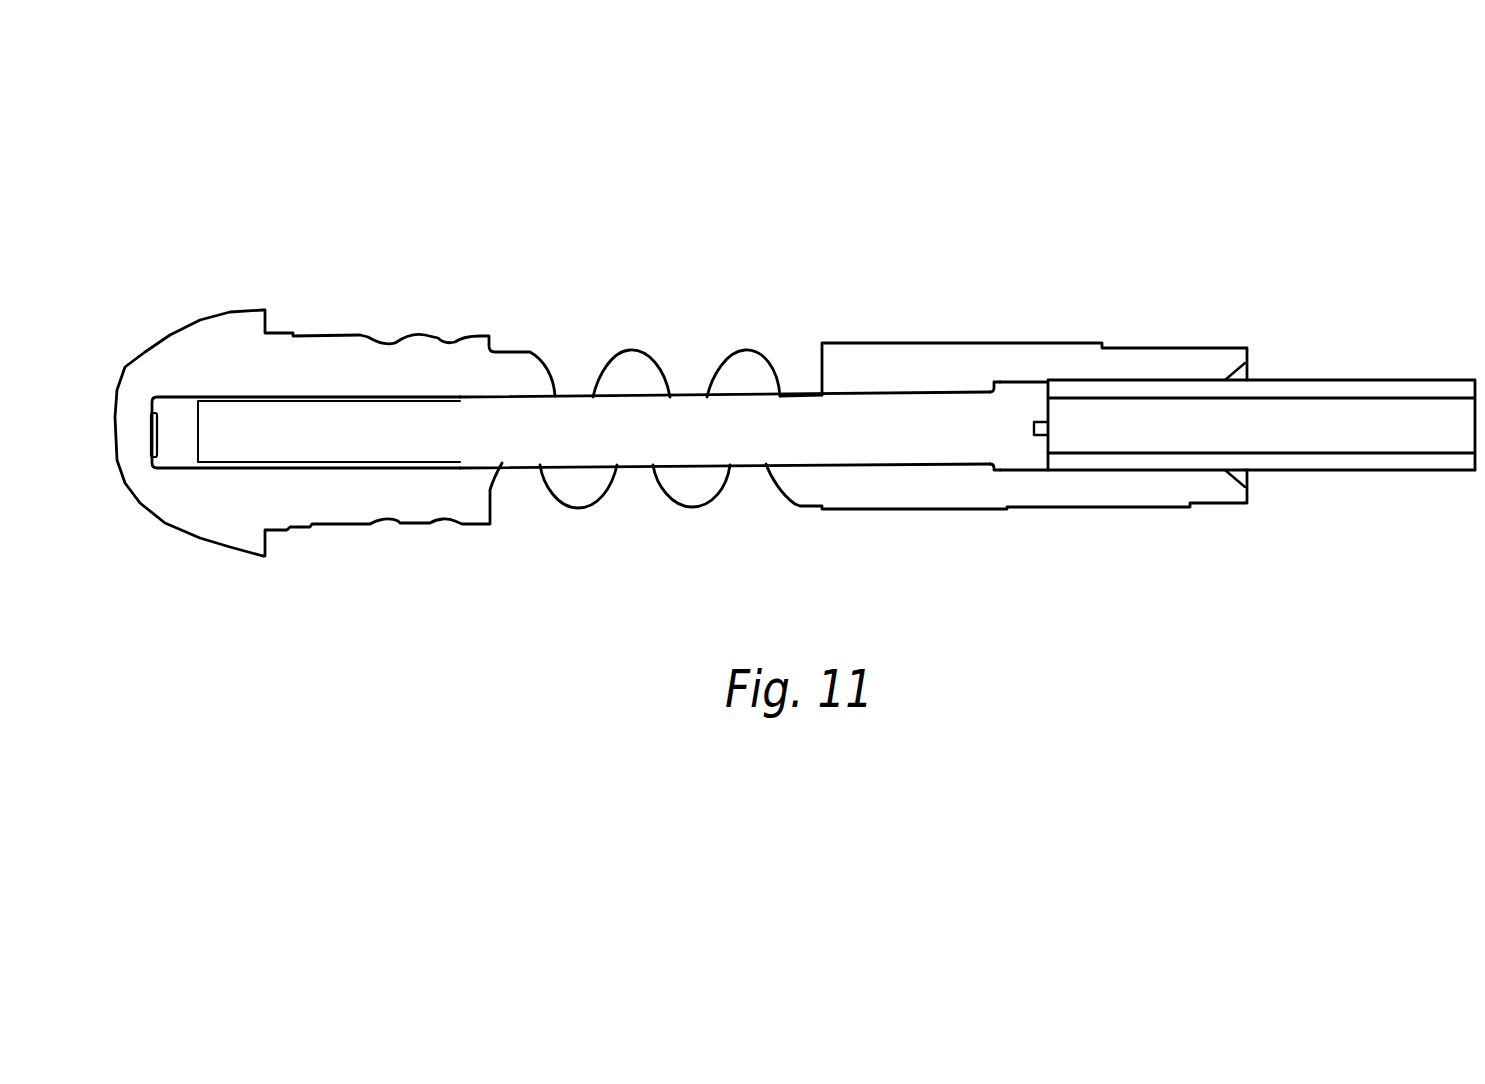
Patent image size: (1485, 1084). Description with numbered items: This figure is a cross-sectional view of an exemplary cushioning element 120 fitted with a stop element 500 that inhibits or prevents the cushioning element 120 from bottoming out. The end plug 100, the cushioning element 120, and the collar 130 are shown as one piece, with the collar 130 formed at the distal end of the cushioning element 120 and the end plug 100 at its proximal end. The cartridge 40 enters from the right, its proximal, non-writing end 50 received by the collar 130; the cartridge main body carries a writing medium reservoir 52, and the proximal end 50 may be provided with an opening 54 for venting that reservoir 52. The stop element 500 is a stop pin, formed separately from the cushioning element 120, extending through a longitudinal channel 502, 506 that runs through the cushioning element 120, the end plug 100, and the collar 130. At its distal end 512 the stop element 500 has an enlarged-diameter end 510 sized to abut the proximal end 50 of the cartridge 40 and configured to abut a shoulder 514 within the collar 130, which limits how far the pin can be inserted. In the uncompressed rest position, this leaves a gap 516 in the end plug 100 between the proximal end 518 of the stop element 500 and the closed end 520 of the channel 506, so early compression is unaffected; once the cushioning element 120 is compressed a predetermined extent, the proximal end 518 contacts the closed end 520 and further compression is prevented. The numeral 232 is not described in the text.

The cartridge 40 is at (1261, 477).
The proximal end 50 is at (1261, 475).
The writing medium reservoir 52 is at (1333, 472).
The opening 54 is at (1047, 448).
The end plug 100 is at (353, 528).
The cushioning element 120 is at (641, 480).
The collar 130 is at (1043, 436).
The chamfered end 232 is at (1253, 367).
The stop element 500 is at (769, 426).
The longitudinal channel 502 is at (536, 467).
The longitudinal channel 506 is at (816, 387).
The enlarged-diameter end 510 is at (1017, 398).
The distal end 512 is at (980, 473).
The shoulder 514 is at (990, 387).
The gap 516 is at (182, 450).
The proximal end 518 is at (255, 478).
The closed end 520 is at (163, 443).